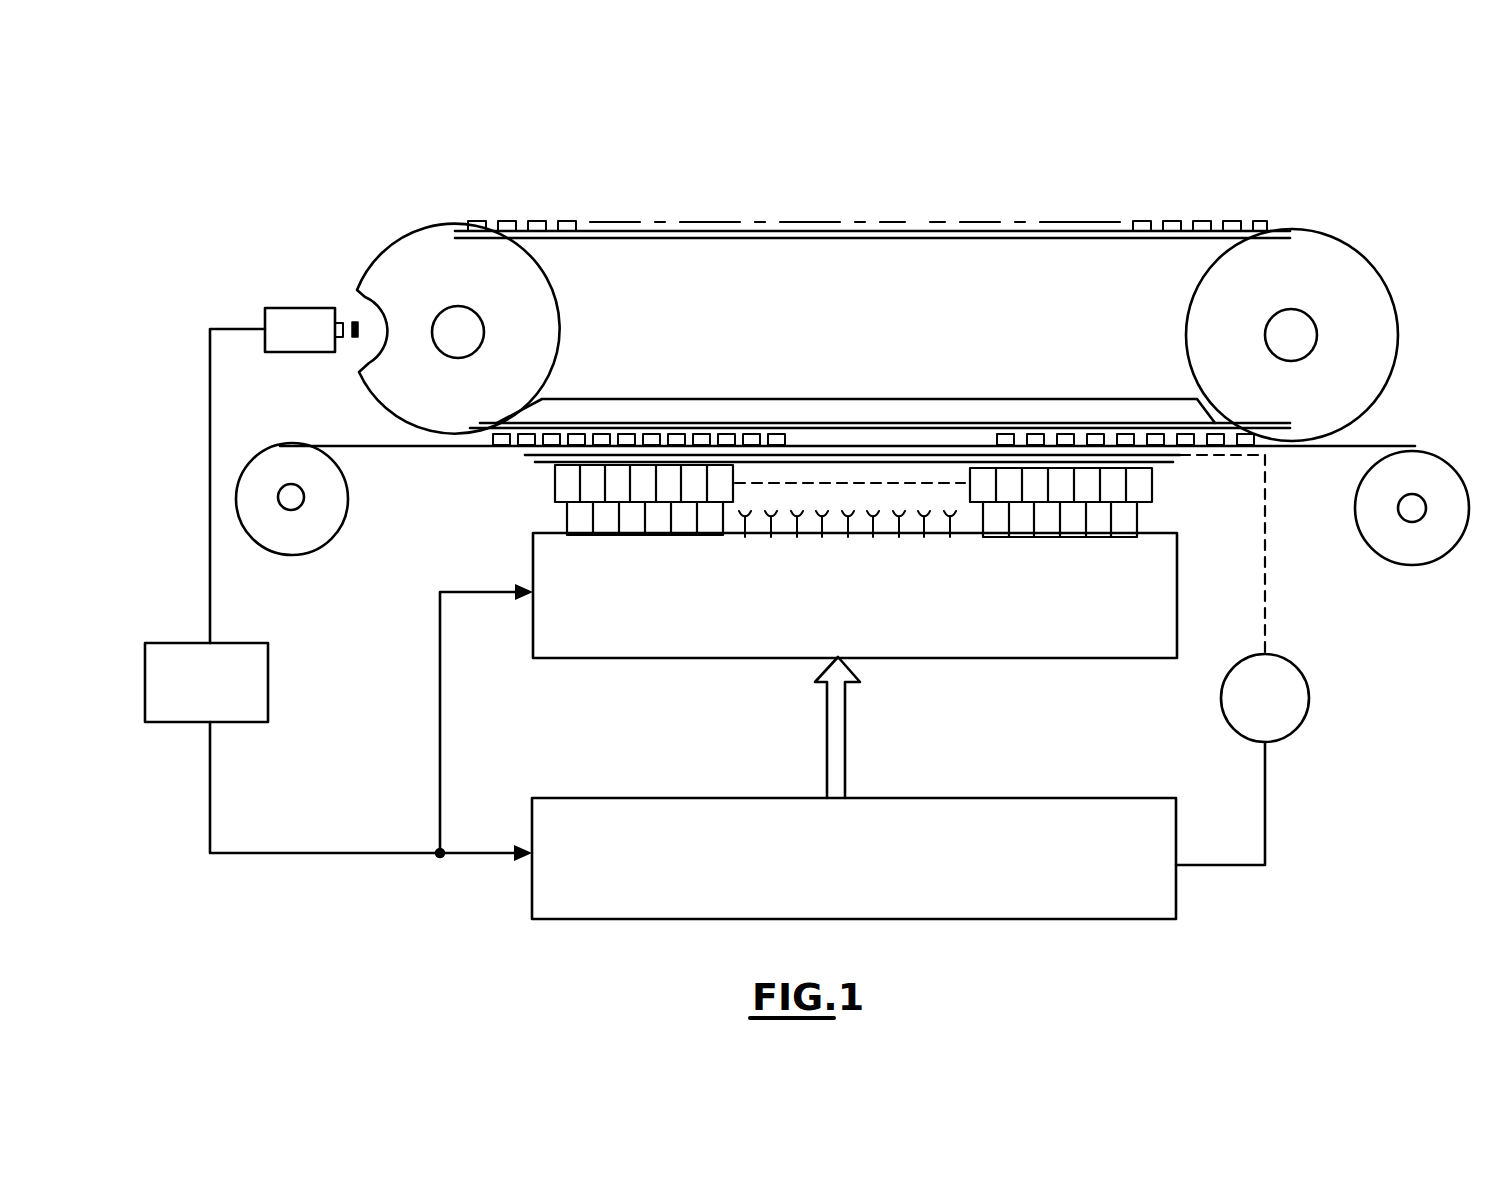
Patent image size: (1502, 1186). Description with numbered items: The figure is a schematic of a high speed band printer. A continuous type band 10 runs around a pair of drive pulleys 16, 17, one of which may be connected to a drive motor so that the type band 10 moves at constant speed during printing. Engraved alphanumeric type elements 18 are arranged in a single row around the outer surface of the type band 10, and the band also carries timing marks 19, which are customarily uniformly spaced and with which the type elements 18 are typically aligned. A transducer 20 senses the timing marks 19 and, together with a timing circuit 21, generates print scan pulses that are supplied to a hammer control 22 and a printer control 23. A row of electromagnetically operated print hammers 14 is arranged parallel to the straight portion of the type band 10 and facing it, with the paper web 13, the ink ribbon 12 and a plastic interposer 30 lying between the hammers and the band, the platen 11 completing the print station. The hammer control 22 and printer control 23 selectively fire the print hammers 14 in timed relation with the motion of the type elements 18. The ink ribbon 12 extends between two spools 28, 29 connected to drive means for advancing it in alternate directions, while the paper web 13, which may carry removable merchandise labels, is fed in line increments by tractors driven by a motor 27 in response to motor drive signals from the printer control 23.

The type band 10 is at (918, 236).
The platen 11 is at (885, 400).
The ink ribbon 12 is at (1345, 446).
The paper web 13 is at (522, 456).
The print hammers 14 is at (555, 483).
The drive pulley 16 is at (1320, 280).
The drive pulley 17 is at (442, 248).
The type elements 18 is at (541, 229).
The timing marks 19 is at (350, 318).
The transducer 20 is at (285, 308).
The timing circuit 21 is at (228, 643).
The hammer control 22 is at (1065, 658).
The printer control 23 is at (1020, 800).
The motor 27 is at (1297, 670).
The spool 28 is at (1435, 466).
The spool 29 is at (325, 528).
The interposer 30 is at (1170, 470).